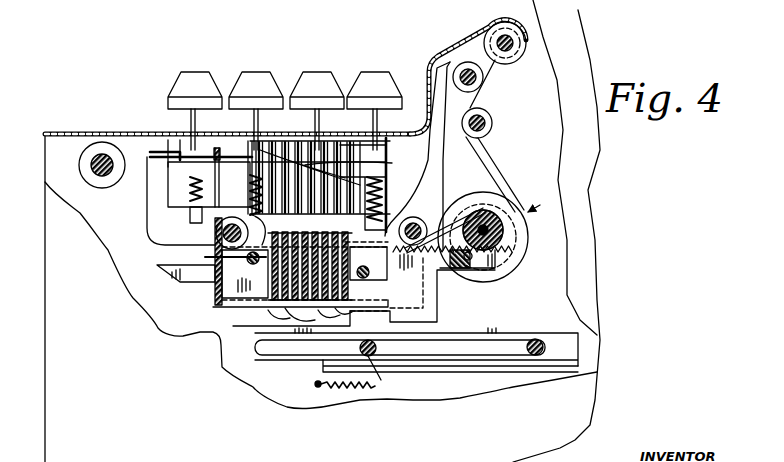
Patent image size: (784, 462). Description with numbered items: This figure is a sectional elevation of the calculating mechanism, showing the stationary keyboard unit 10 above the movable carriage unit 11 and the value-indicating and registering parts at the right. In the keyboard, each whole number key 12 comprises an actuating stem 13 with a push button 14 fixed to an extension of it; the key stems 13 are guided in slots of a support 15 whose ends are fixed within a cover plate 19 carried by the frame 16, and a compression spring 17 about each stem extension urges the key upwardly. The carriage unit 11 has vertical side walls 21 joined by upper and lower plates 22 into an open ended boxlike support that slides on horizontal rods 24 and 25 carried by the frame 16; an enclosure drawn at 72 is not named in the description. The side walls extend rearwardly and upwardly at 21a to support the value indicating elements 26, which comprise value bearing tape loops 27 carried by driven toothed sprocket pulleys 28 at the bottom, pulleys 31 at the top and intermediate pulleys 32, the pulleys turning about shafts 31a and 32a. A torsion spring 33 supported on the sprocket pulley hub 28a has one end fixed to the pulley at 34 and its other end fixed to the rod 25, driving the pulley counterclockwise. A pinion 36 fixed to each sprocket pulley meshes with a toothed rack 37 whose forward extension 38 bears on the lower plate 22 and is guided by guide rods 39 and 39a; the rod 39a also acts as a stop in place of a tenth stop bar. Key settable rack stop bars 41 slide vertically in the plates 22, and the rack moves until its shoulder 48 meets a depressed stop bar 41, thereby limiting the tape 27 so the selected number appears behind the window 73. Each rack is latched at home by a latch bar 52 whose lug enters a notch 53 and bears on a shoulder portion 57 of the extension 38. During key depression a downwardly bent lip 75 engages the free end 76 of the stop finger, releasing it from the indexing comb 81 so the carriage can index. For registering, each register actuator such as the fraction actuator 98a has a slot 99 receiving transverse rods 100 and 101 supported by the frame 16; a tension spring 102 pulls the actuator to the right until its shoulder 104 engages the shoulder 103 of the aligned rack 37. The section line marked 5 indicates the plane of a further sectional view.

The keyboard unit 10 is at (164, 73).
The carriage unit 11 is at (442, 293).
The whole number key 12 is at (362, 78).
The actuating stem 13 is at (300, 150).
The push button 14 is at (240, 73).
The support 15 is at (356, 238).
The frame 16 is at (60, 346).
The compression spring 17 is at (190, 183).
The cover plate 19 is at (108, 128).
The vertical side wall 21 is at (156, 230).
The side wall extension 21a is at (437, 146).
The upper and lower plate 22 is at (375, 243).
The rod 24 is at (216, 233).
The rod 25 is at (419, 218).
The value indicating elements 26 is at (432, 95).
The value bearing tape loop 27 is at (447, 200).
The toothed sprocket pulley 28 is at (490, 197).
The sprocket pulley hub 28a is at (522, 207).
The pulley 31 is at (520, 36).
The shaft 31a is at (513, 43).
The intermediate pulley 32 is at (490, 116).
The shaft 32a is at (477, 77).
The torsion spring 33 is at (470, 220).
The spring end fixing 34 is at (500, 270).
The pinion 36 is at (483, 235).
The toothed rack 37 is at (428, 260).
The forward extension 38 is at (205, 257).
The guide rod 39 is at (242, 258).
The guide rod 39a is at (354, 267).
The rack stop bar 41 is at (310, 317).
The shoulder 48 is at (255, 288).
The latch bar 52 is at (215, 308).
The notch 53 is at (226, 274).
The shoulder portion 57 is at (209, 283).
The section line 5 is at (250, 163).
The housing 72 is at (218, 185).
The window 73 is at (463, 40).
The downwardly bent lip 75 is at (180, 131).
The free end 76 is at (168, 166).
The indexing comb 81 is at (152, 155).
The register actuator 98a is at (553, 366).
The slot 99 is at (487, 362).
The transverse rod 100 is at (392, 375).
The transverse rod 101 is at (562, 340).
The tension spring 102 is at (364, 400).
The shoulder 103 is at (380, 339).
The shoulder 104 is at (433, 321).